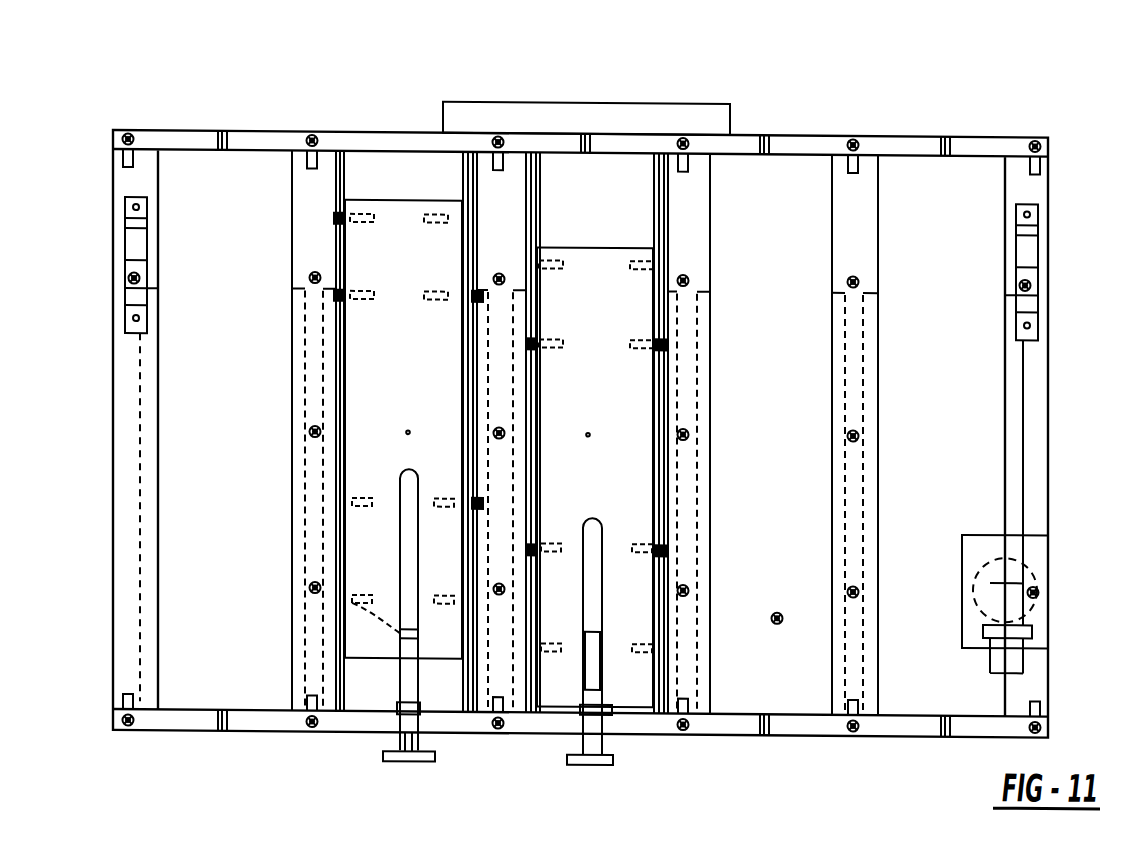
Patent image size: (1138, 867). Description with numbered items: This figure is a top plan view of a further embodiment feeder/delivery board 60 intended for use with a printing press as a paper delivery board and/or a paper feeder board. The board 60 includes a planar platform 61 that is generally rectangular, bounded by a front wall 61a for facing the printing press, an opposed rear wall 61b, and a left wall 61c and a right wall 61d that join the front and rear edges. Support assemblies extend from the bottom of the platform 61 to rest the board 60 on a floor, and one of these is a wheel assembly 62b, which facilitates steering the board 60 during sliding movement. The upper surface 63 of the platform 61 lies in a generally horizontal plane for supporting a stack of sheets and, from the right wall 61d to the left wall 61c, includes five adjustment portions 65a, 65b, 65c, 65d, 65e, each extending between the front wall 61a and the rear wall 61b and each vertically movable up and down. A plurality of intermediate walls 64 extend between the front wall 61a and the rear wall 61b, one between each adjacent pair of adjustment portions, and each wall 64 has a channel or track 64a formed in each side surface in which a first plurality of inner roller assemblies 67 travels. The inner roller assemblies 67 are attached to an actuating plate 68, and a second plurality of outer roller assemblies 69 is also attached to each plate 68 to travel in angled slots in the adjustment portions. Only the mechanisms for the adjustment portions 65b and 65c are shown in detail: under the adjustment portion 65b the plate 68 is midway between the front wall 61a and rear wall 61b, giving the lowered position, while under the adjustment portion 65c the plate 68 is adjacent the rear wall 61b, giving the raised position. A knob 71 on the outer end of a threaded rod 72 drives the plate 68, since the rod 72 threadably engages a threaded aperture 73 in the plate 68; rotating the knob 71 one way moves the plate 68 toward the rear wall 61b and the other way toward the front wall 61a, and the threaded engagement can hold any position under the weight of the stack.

The feeder/delivery board 60 is at (589, 419).
The planar platform 61 is at (1052, 180).
The front wall 61a is at (791, 130).
The rear wall 61b is at (745, 726).
The left wall 61c is at (1050, 415).
The right wall 61d is at (113, 423).
The wheel assembly 62b is at (1036, 576).
The upper surface 63 is at (958, 380).
The intermediate wall 64 is at (297, 684).
The channel or track 64a is at (338, 702).
The adjustment portion 65a is at (244, 170).
The adjustment portion 65b is at (381, 170).
The adjustment portion 65c is at (620, 172).
The adjustment portion 65d is at (744, 174).
The adjustment portion 65e is at (960, 172).
The inner roller assembly 67 is at (450, 290).
The actuating plate 68 is at (373, 652).
The outer roller assembly 69 is at (430, 214).
The knob 71 is at (602, 756).
The threaded rod 72 is at (597, 668).
The threaded aperture 73 is at (578, 563).